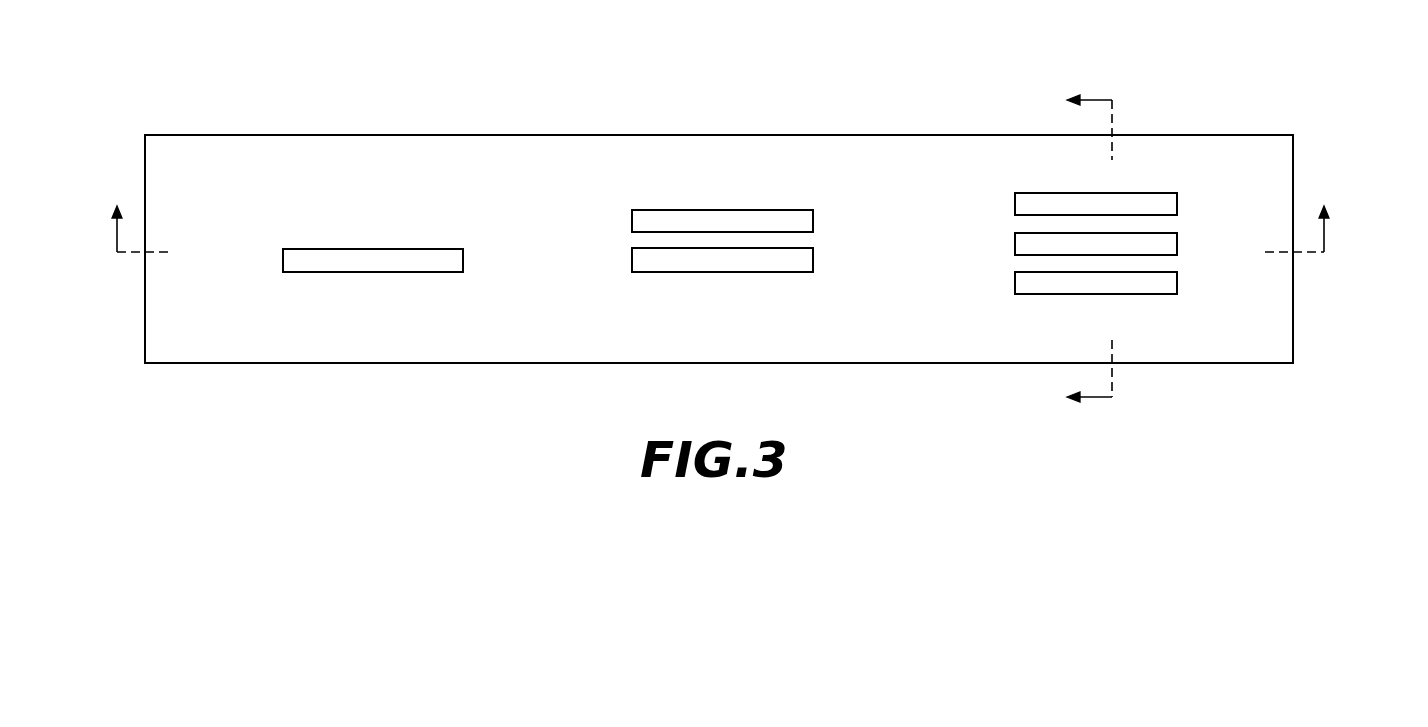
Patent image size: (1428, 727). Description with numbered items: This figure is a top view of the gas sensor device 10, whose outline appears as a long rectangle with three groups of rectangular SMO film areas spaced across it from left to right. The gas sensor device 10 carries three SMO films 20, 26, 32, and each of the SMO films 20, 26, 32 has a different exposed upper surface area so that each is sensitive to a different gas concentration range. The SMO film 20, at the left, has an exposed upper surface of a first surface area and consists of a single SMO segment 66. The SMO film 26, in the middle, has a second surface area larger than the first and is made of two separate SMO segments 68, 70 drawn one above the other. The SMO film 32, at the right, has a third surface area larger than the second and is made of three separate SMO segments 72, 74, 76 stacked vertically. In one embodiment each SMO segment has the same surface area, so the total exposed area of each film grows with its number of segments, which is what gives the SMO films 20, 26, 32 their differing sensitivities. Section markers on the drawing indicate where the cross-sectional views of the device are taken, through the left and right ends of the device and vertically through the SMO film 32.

The gas sensor device 10 is at (929, 61).
The SMO film 20 is at (413, 235).
The SMO film 26 is at (777, 195).
The SMO film 32 is at (1170, 185).
The SMO segment 66 is at (286, 262).
The SMO segment 68 is at (636, 222).
The SMO segment 70 is at (636, 260).
The SMO segment 72 is at (1019, 207).
The SMO segment 74 is at (1019, 246).
The SMO segment 76 is at (1019, 284).